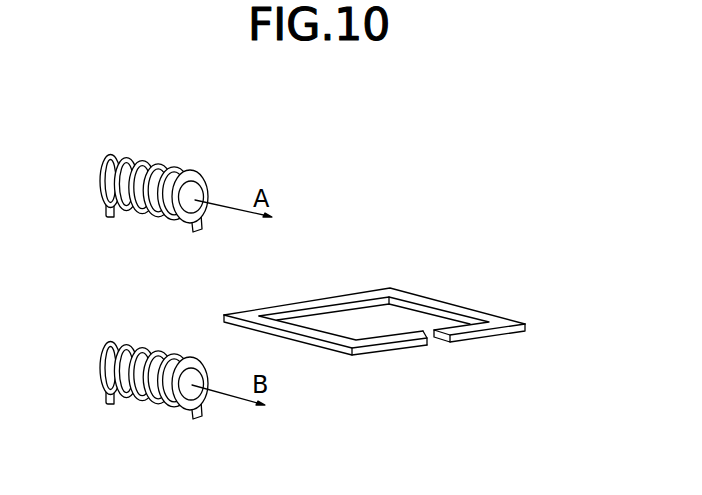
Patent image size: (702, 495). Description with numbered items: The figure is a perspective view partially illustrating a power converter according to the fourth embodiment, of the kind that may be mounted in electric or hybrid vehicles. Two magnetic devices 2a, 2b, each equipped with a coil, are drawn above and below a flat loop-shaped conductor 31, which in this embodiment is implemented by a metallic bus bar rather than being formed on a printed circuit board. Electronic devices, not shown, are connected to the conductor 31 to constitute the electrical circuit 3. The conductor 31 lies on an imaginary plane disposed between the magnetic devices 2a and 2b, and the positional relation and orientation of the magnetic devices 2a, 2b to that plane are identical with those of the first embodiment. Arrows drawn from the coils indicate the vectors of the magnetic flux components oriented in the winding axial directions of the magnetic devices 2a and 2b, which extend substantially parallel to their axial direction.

The magnetic device 2a is at (160, 157).
The magnetic device 2b is at (135, 398).
The electrical circuit 3 is at (390, 274).
The conductor 31 is at (420, 294).